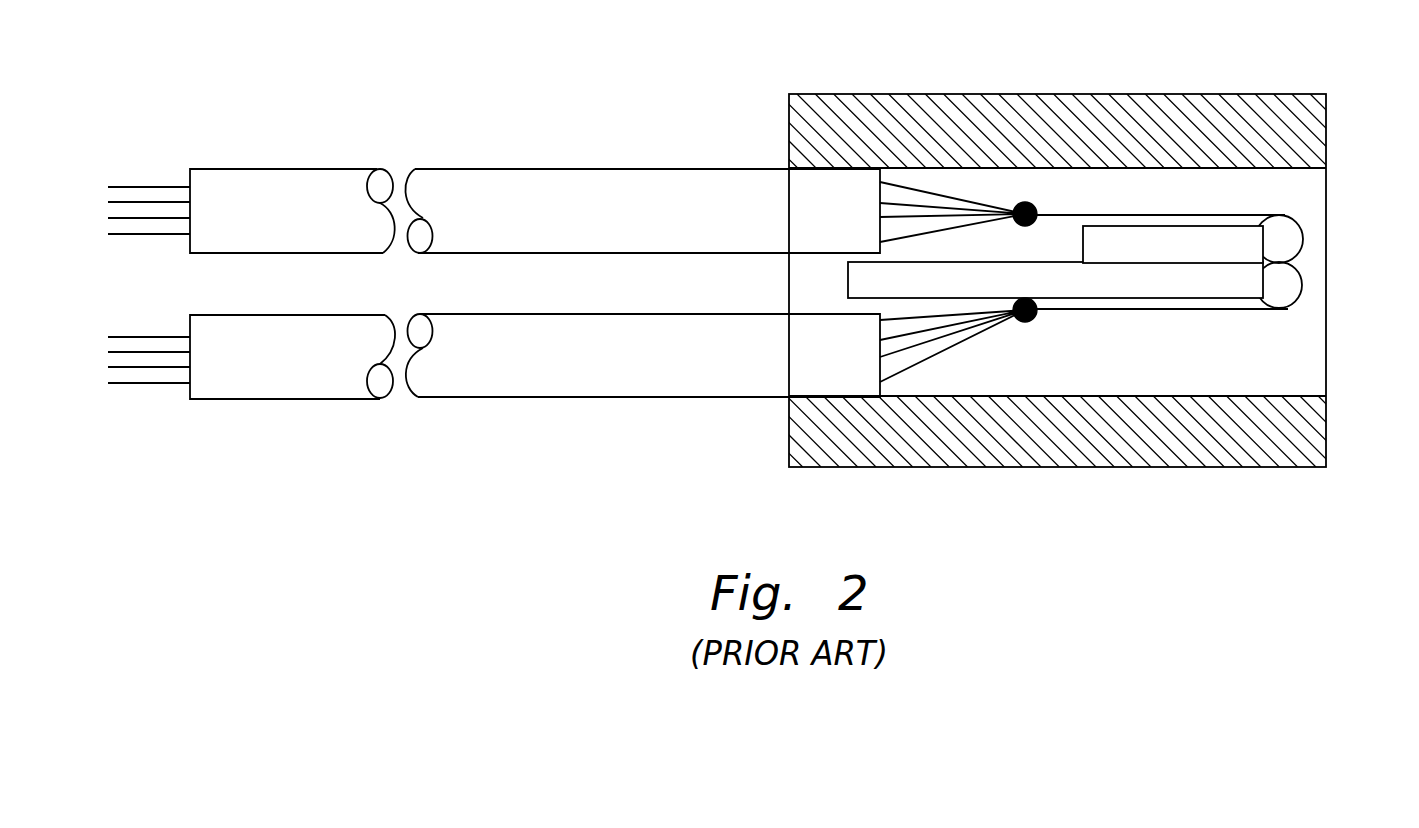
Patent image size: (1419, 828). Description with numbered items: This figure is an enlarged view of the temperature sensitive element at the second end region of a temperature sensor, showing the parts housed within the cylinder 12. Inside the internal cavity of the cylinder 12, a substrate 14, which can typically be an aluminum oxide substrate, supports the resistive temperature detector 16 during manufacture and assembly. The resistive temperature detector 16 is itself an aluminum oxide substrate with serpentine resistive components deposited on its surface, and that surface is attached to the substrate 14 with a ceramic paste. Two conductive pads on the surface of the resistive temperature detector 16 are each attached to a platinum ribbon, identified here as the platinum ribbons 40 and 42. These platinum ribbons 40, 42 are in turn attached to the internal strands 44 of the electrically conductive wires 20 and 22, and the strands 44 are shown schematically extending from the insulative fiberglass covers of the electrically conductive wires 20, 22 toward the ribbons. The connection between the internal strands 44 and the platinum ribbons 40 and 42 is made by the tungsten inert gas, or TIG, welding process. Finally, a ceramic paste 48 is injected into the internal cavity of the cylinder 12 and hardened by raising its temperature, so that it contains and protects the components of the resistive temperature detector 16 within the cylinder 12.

The cylinder 12 is at (950, 107).
The substrate 14 is at (1293, 308).
The resistive temperature detector 16 is at (1290, 215).
The electrically conductive wire 20 is at (263, 178).
The electrically conductive wire 22 is at (272, 390).
The platinum ribbon 40 is at (1304, 238).
The platinum ribbon 42 is at (1303, 282).
The internal strands 44 is at (967, 197).
The ceramic paste 48 is at (1313, 377).